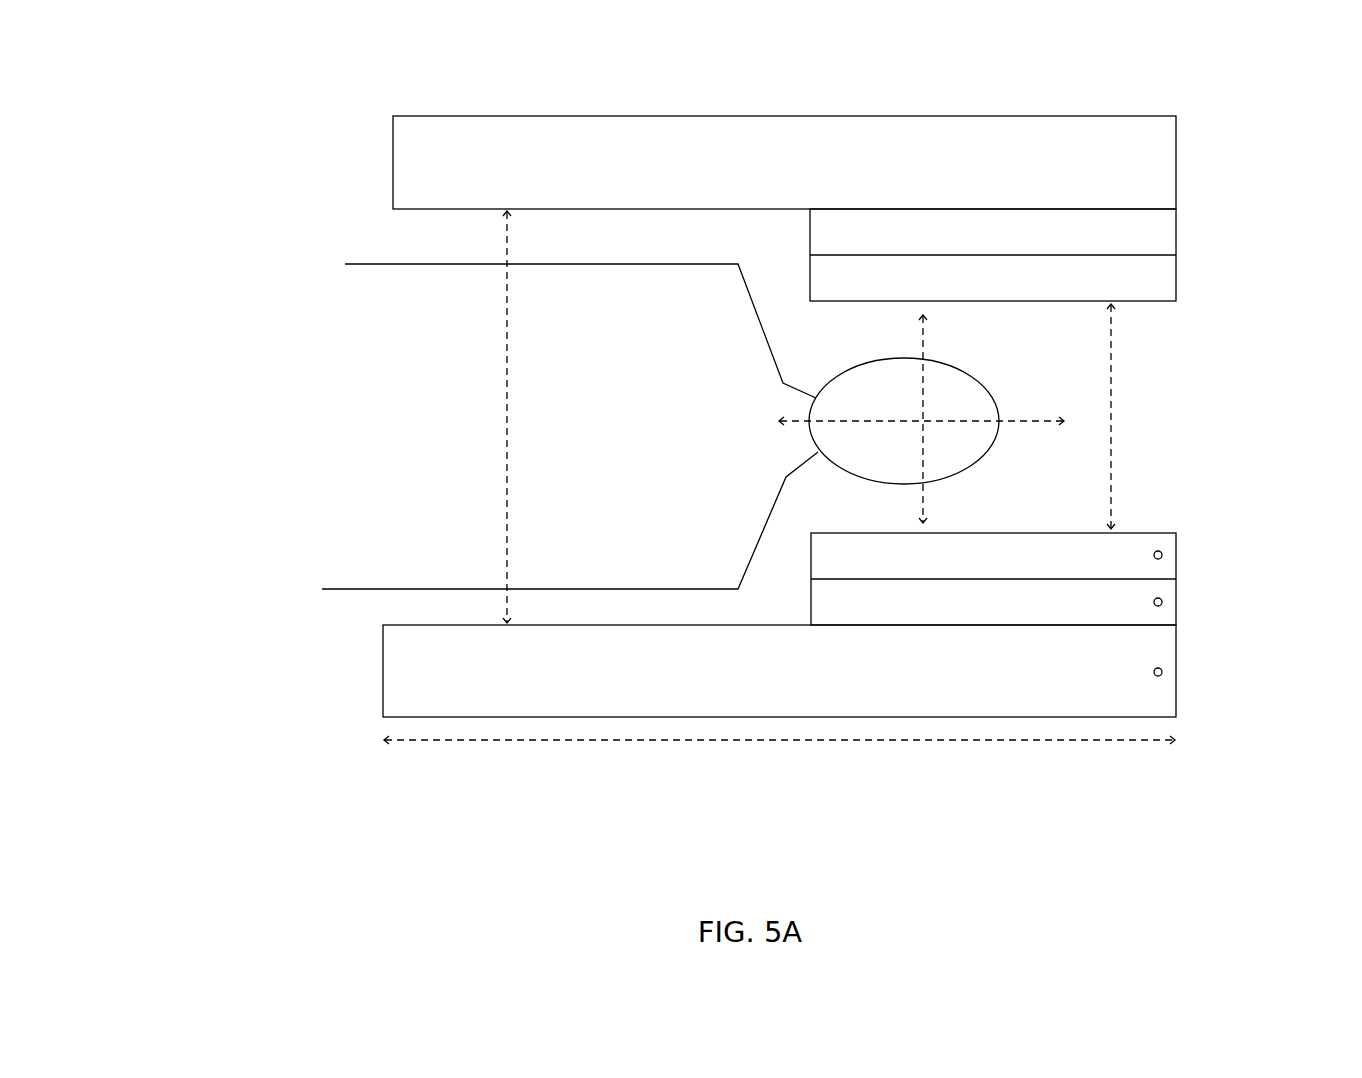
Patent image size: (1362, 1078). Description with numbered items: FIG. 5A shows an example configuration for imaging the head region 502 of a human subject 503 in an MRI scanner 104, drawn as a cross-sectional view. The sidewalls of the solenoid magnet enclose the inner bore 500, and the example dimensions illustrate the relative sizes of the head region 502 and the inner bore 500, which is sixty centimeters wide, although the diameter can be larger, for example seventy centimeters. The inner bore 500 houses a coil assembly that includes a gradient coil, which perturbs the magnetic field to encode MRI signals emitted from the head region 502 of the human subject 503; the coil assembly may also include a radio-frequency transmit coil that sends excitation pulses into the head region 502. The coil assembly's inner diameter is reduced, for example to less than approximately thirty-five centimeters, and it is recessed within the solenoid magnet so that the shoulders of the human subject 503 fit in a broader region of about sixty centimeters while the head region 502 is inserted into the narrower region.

The MRI scanner 104 is at (1296, 134).
The inner bore 500 is at (1172, 374).
The head region 502 is at (952, 444).
The human subject 503 is at (363, 575).